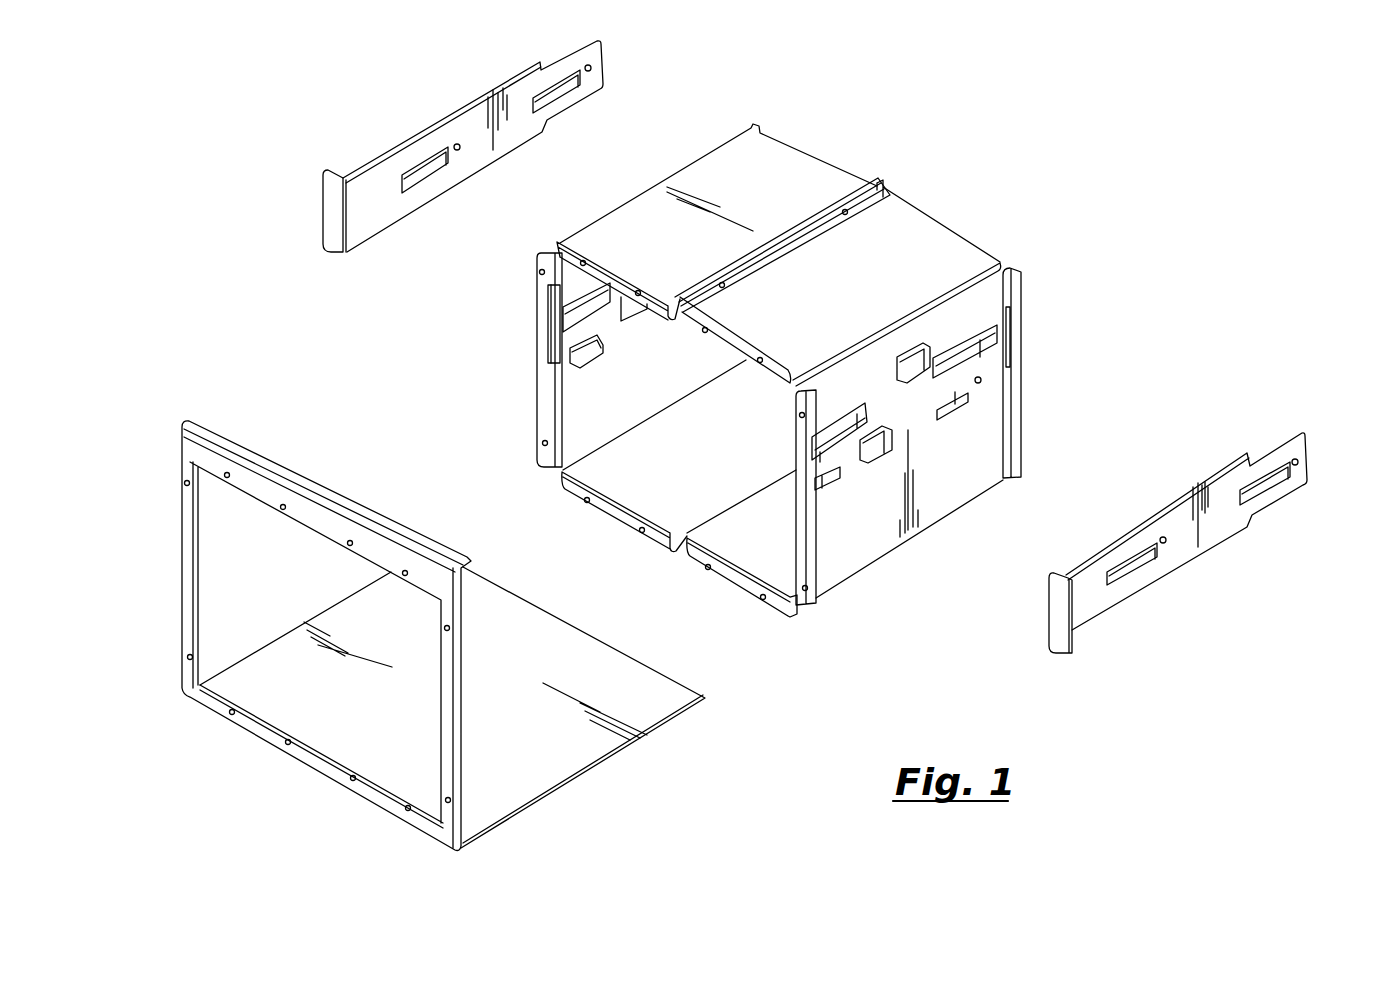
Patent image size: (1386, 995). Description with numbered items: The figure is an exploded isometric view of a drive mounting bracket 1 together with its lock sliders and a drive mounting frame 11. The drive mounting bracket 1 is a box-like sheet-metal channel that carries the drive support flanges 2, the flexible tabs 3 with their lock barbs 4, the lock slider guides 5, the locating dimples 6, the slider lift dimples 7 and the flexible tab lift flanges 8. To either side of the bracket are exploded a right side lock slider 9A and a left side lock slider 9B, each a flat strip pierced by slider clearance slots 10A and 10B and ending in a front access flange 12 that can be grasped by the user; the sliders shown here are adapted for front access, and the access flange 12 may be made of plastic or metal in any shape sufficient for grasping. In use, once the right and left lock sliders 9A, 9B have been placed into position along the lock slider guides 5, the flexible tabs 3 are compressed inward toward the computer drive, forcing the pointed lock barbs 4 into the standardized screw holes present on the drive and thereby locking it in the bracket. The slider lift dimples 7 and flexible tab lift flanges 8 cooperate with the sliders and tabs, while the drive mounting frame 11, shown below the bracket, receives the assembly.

The drive mounting bracket 1 is at (770, 370).
The drive support flange 2 is at (967, 398).
The flexible tab 3 is at (570, 308).
The lock barb 4 is at (570, 342).
The lock slider guide 5 is at (918, 357).
The locating dimple 6 is at (980, 380).
The slider lift dimple 7 is at (588, 68).
The flexible tab lift flange 8 is at (997, 337).
The right side lock slider 9A is at (1205, 472).
The left side lock slider 9B is at (453, 97).
The slider clearance slot 10A is at (433, 163).
The slider clearance slot 10B is at (552, 90).
The drive mounting frame 11 is at (312, 462).
The front access flange 12 is at (328, 210).